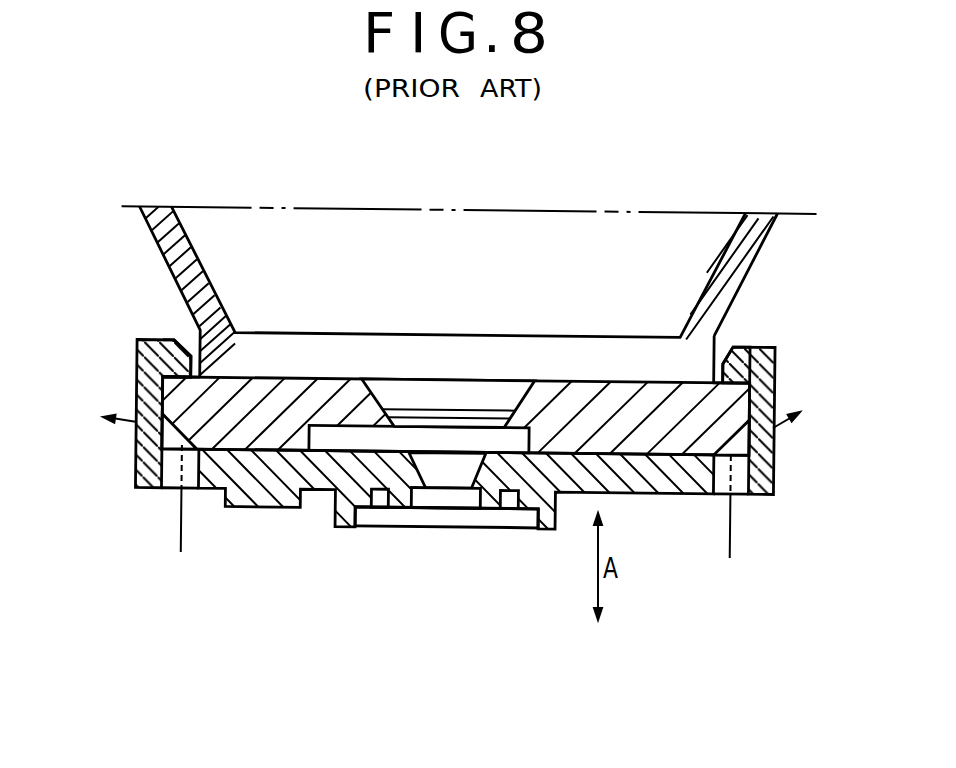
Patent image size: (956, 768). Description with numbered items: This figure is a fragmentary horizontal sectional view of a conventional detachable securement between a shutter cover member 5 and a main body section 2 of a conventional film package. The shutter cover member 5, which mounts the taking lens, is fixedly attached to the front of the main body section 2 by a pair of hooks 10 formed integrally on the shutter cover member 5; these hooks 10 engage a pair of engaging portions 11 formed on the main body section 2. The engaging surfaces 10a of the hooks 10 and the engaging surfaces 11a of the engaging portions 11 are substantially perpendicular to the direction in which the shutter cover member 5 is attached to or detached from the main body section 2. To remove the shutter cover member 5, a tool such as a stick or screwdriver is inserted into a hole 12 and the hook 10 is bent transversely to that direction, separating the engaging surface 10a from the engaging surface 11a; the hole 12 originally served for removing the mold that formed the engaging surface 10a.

The main body section 2 is at (205, 228).
The shutter cover member 5 is at (340, 519).
The hooks 10 is at (128, 347).
The engaging surface 10a is at (163, 341).
The engaging portions 11 is at (167, 404).
The engaging surface 11a is at (157, 380).
The hole 12 is at (188, 492).